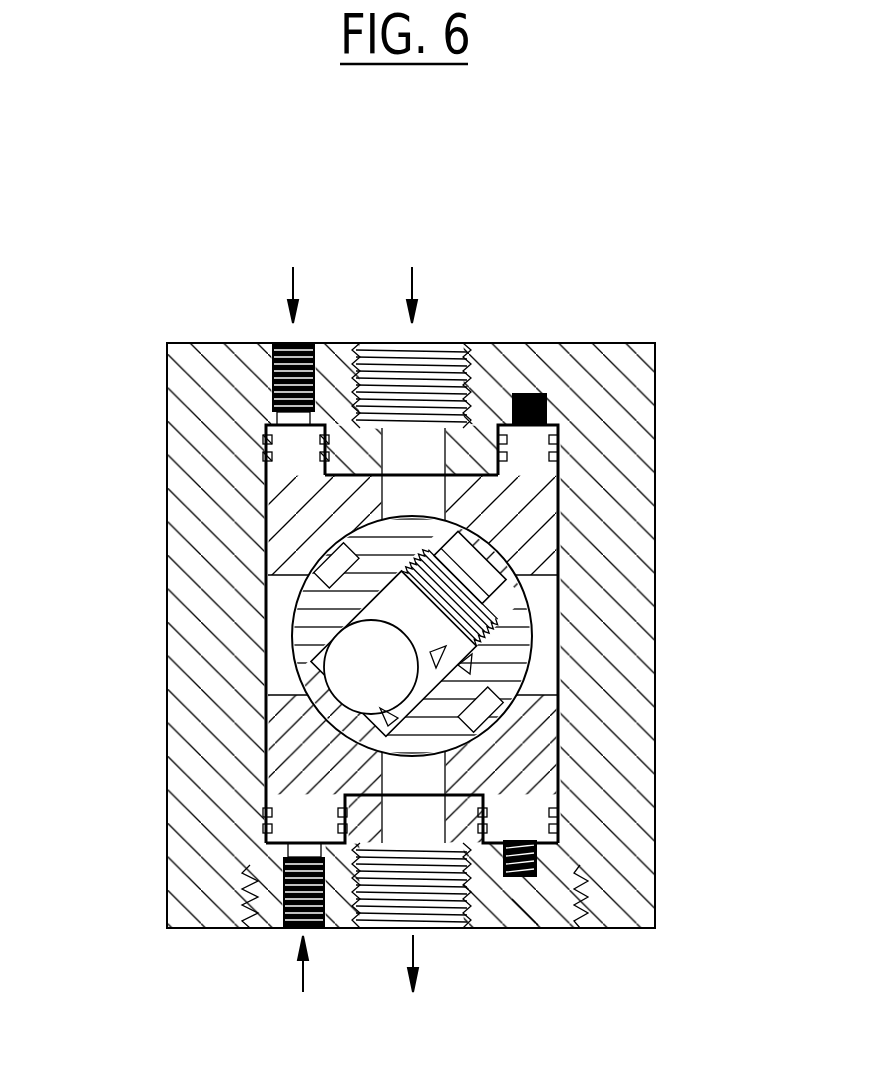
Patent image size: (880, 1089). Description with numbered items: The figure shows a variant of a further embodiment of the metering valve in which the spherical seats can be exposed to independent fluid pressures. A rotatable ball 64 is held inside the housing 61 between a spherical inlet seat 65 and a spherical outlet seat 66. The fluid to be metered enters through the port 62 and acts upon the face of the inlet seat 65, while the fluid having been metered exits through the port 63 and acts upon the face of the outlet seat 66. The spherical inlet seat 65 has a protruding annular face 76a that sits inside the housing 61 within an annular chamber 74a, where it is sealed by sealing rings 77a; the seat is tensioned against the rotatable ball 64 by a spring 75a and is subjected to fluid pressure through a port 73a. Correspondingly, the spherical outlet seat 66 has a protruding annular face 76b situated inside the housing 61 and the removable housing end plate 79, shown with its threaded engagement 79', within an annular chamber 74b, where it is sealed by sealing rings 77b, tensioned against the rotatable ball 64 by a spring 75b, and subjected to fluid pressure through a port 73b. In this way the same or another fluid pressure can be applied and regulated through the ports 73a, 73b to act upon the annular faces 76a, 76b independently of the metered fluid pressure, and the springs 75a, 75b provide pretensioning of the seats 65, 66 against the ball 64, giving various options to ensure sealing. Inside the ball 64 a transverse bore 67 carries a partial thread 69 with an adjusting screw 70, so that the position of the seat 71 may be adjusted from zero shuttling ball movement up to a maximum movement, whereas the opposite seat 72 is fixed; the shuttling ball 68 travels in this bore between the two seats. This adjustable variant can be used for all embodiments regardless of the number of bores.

The housing 61 is at (598, 390).
The port 62 is at (440, 348).
The port 63 is at (385, 912).
The rotatable ball 64 is at (323, 598).
The spherical inlet seat 65 is at (290, 510).
The spherical outlet seat 66 is at (290, 745).
The transverse bore 67 is at (445, 667).
The ball 68 is at (355, 667).
The partial thread 69 is at (515, 598).
The adjusting screw 70 is at (458, 540).
The seat 71 is at (473, 648).
The seat 72 is at (397, 713).
The port 73a is at (287, 345).
The port 73b is at (295, 925).
The annular chamber 74a is at (266, 420).
The annular chamber 74b is at (243, 917).
The spring 75a is at (528, 393).
The spring 75b is at (510, 877).
The protruding annular face 76a is at (525, 442).
The protruding annular face 76b is at (305, 830).
The sealing rings 77a is at (265, 458).
The sealing rings 77b is at (262, 826).
The removable housing end plate 79 is at (516, 984).
The threaded bore 79' is at (579, 967).